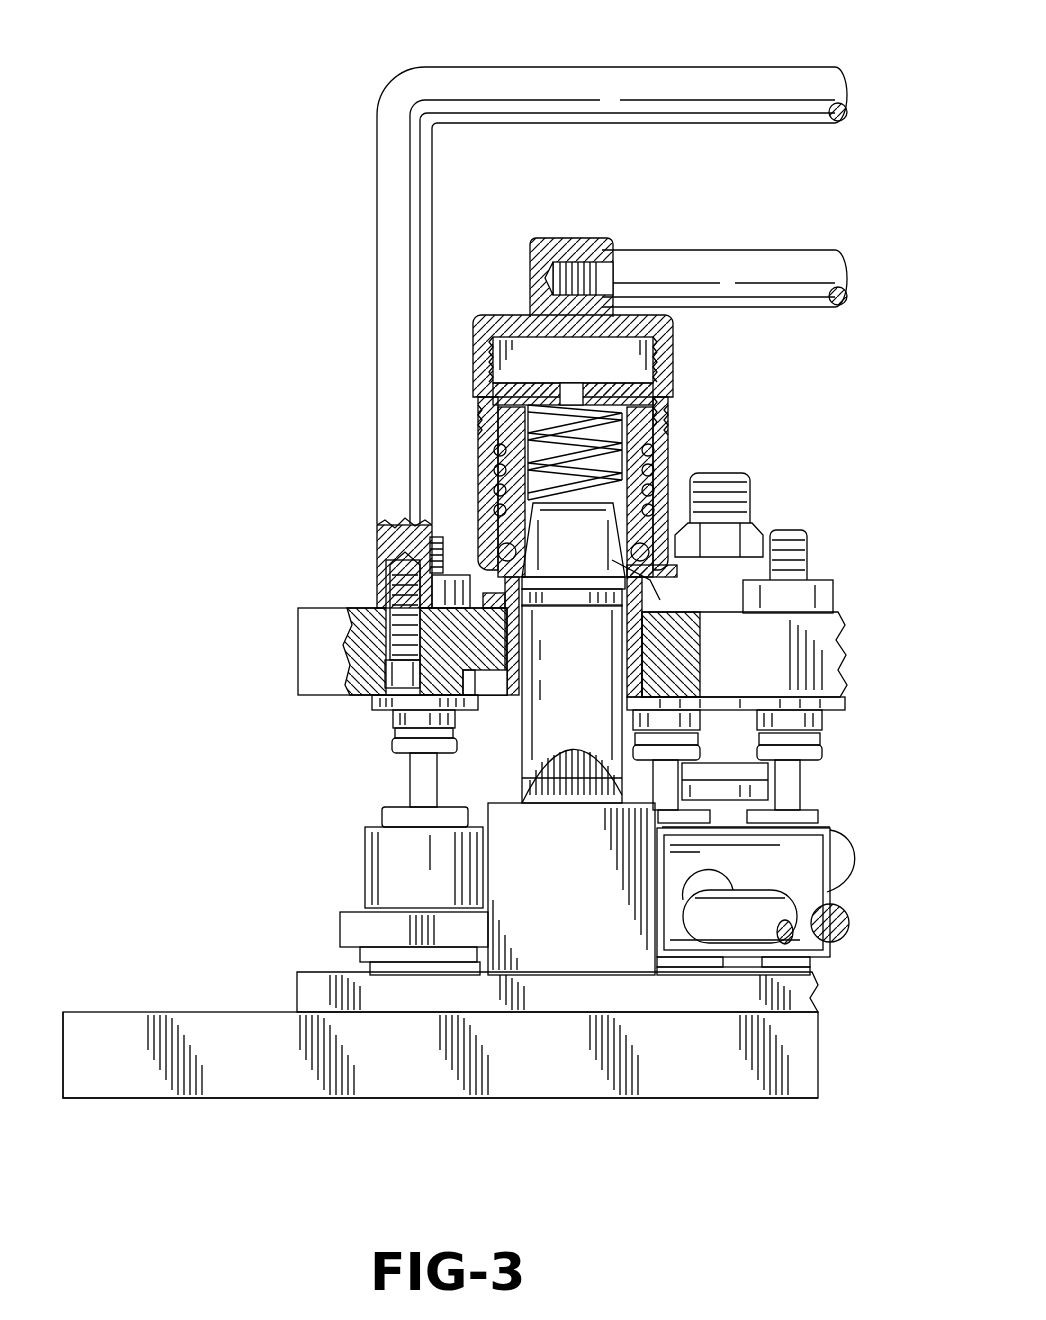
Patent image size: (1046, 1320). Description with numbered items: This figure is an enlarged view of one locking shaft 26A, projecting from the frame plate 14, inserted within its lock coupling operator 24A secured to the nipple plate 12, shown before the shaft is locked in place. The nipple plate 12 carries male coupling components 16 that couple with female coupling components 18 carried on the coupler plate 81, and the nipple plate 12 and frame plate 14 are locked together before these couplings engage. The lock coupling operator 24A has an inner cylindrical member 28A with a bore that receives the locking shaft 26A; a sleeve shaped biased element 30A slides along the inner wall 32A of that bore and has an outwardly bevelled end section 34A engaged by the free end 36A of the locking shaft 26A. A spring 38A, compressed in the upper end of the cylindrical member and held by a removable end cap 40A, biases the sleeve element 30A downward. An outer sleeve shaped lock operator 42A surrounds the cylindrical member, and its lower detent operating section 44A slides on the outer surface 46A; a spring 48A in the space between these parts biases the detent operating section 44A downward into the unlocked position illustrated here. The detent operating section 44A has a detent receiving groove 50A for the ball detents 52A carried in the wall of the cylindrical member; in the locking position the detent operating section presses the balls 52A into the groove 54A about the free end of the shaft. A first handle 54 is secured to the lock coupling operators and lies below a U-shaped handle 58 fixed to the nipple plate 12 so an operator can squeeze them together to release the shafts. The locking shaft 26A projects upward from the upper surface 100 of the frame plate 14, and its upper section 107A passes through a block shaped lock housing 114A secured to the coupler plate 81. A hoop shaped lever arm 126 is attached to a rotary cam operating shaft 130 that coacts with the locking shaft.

The nipple plate 12 is at (318, 652).
The frame plate 14 is at (305, 1078).
The male coupling component 16 is at (830, 580).
The female coupling component 18 is at (826, 822).
The lock coupling operator 24A is at (672, 395).
The locking shaft 26A is at (500, 758).
The inner cylindrical member 28A is at (642, 420).
The sleeve shaped biased element 30A is at (632, 475).
The inner wall 32A is at (480, 384).
The outwardly bevelled end section 34A is at (528, 522).
The free end 36A is at (582, 540).
The spring 38A is at (568, 425).
The removable end cap 40A is at (607, 392).
The outer sleeve shaped lock operator 42A is at (484, 418).
The detent operating section 44A is at (695, 590).
The outer surface 46A is at (500, 460).
The spring 48A is at (501, 480).
The detent receiving groove 50A is at (504, 553).
The ball detents 52A is at (690, 555).
The first handle 54 is at (754, 272).
The groove 54A is at (566, 598).
The U-shaped handle 58 is at (662, 92).
The coupler plate 81 is at (314, 978).
The upper surface 100 is at (132, 1012).
The upper section 107A is at (607, 679).
The lock housing 114A is at (573, 928).
The lever arm 126 is at (705, 930).
The rotary cam operating shaft 130 is at (828, 850).